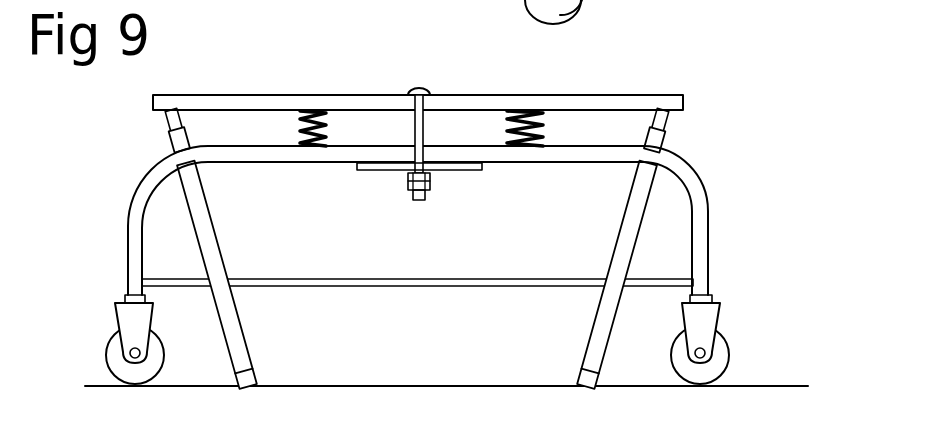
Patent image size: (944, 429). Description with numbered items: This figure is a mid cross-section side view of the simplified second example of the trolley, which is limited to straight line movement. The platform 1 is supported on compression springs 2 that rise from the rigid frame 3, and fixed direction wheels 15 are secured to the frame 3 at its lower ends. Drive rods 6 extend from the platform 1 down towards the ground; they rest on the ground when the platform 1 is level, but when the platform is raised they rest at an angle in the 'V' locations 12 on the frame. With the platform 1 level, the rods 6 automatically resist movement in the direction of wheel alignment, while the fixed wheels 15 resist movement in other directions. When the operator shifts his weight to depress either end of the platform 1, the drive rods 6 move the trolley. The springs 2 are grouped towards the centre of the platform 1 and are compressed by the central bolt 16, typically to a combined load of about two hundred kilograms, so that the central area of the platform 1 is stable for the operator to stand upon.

The platform 1 is at (685, 95).
The compression springs 2 is at (545, 129).
The rigid frame 3 is at (708, 240).
The drive rods 6 is at (595, 325).
The 'V' locations 12 is at (420, 279).
The fixed direction wheels 15 is at (730, 350).
The central bolt 16 is at (413, 137).